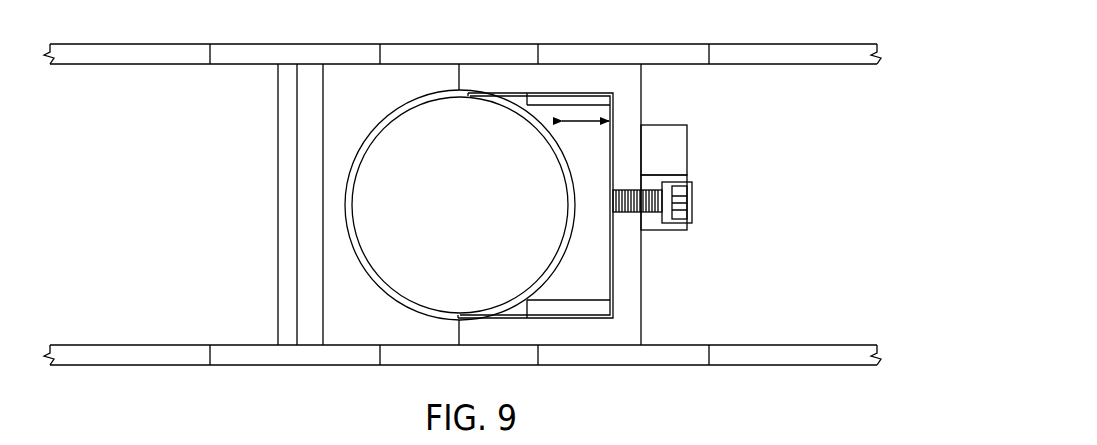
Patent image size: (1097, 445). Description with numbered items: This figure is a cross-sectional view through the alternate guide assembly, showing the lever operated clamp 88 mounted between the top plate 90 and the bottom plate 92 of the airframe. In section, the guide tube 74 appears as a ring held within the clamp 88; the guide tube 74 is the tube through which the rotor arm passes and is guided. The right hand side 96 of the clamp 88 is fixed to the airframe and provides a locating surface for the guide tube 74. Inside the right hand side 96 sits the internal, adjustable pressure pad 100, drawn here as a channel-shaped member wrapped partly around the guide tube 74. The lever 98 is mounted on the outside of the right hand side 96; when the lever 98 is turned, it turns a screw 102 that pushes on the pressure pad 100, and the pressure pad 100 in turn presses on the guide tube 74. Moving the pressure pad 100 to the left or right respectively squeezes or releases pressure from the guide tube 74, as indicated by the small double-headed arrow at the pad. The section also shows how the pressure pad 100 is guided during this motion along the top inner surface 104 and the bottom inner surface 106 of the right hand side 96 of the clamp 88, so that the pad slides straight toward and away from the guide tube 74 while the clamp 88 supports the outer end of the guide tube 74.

The guide tube 74 is at (560, 228).
The lever operated clamp 88 is at (250, 196).
The top plate 90 is at (840, 44).
The bottom plate 92 is at (832, 345).
The right hand side 96 is at (641, 243).
The lever 98 is at (687, 140).
The pressure pad 100 is at (613, 292).
The screw 102 is at (692, 200).
The top inner surface 104 is at (517, 94).
The bottom inner surface 106 is at (515, 318).